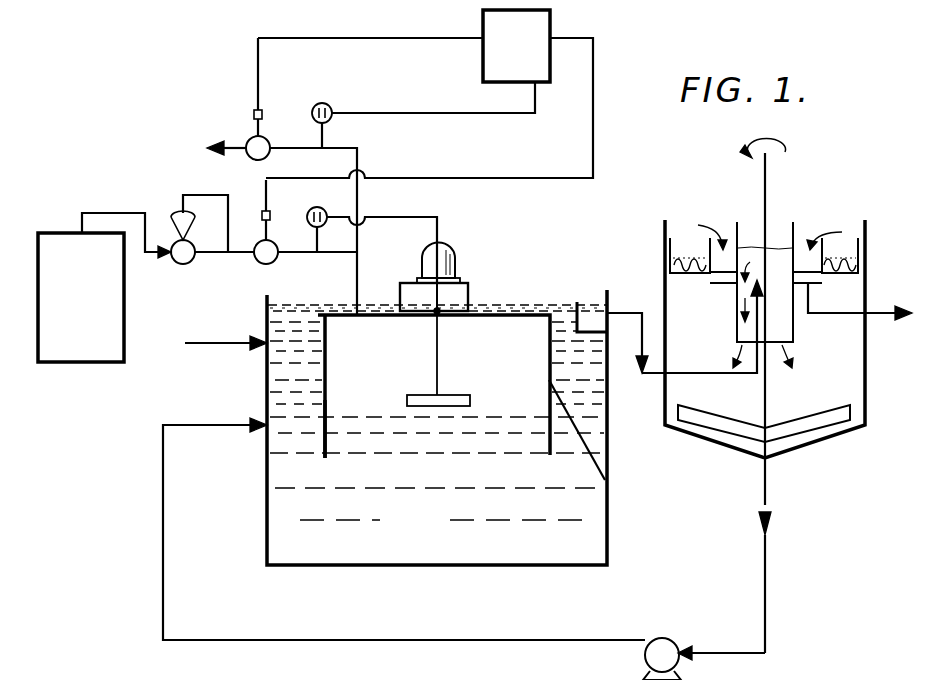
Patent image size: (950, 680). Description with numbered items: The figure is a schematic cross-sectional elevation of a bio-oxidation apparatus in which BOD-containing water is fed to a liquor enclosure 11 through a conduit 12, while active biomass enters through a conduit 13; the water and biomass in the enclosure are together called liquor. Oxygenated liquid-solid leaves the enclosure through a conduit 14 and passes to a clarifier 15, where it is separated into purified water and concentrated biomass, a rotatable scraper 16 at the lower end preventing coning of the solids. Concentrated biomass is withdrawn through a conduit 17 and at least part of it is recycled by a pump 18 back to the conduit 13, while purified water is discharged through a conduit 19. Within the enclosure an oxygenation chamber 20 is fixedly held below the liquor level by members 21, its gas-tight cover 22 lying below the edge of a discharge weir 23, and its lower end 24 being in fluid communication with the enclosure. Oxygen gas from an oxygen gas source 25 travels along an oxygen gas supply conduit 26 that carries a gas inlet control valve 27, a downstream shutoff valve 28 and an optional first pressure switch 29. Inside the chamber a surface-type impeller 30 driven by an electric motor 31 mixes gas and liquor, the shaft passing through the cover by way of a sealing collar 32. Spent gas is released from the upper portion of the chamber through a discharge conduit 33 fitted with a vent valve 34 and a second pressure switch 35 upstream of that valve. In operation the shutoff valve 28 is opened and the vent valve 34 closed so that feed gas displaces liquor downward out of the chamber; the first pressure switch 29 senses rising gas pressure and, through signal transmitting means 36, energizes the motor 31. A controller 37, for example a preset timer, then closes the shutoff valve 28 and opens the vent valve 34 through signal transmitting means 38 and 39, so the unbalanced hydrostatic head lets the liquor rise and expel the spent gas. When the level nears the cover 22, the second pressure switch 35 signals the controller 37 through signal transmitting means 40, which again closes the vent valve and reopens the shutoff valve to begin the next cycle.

The liquor enclosure 11 is at (266, 385).
The conduit 12 is at (200, 342).
The conduit 13 is at (166, 488).
The conduit 14 is at (627, 312).
The clarifier 15 is at (848, 432).
The rotatable scraper 16 is at (805, 415).
The conduit 17 is at (730, 655).
The pump 18 is at (669, 640).
The conduit 19 is at (876, 312).
The oxygenation chamber 20 is at (326, 370).
The members 21 is at (592, 466).
The gas-tight cover 22 is at (491, 302).
The discharge weir 23 is at (580, 302).
The lower end 24 is at (324, 455).
The oxygen gas source 25 is at (54, 243).
The oxygen gas supply conduit 26 is at (117, 213).
The gas inlet control valve 27 is at (190, 262).
The shutoff valve 28 is at (258, 262).
The first pressure switch 29 is at (308, 214).
The impeller 30 is at (466, 393).
The electric motor 31 is at (452, 256).
The collar 32 is at (440, 311).
The discharge conduit 33 is at (232, 145).
The vent valve 34 is at (266, 139).
The second pressure switch 35 is at (322, 103).
The signal transmitting means 36 is at (395, 217).
The controller 37 is at (483, 68).
The signal transmitting means 38 is at (593, 82).
The signal transmitting means 39 is at (312, 38).
The signal transmitting means 40 is at (537, 95).